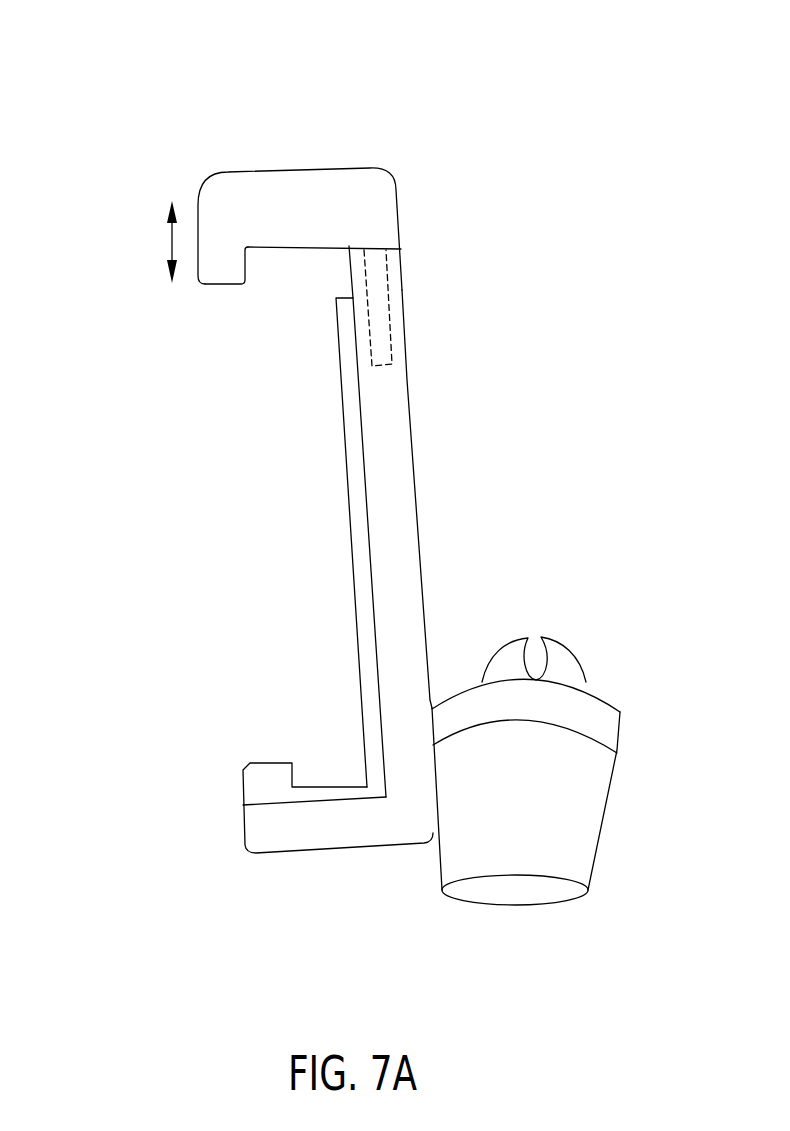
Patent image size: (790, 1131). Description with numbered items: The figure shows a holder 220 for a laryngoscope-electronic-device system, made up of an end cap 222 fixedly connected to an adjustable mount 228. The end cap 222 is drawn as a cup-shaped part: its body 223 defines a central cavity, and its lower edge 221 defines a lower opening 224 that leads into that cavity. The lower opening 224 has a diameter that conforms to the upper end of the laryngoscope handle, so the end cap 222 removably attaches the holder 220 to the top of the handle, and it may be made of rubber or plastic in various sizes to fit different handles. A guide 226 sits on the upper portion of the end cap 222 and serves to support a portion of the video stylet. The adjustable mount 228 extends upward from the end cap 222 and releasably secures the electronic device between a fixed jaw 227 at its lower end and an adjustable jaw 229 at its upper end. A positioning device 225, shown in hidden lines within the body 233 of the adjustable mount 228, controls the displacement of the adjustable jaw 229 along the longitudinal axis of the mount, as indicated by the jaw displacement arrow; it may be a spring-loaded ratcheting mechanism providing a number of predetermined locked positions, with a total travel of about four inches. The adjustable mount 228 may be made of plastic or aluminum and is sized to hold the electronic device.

The holder 220 is at (117, 74).
The lower edge 221 is at (560, 903).
The end cap 222 is at (620, 708).
The body 223 is at (541, 801).
The lower opening 224 is at (492, 888).
The positioning device 225 is at (398, 268).
The guide 226 is at (567, 645).
The fixed jaw 227 is at (260, 873).
The adjustable mount 228 is at (395, 184).
The adjustable jaw 229 is at (207, 287).
The body 233 is at (401, 503).